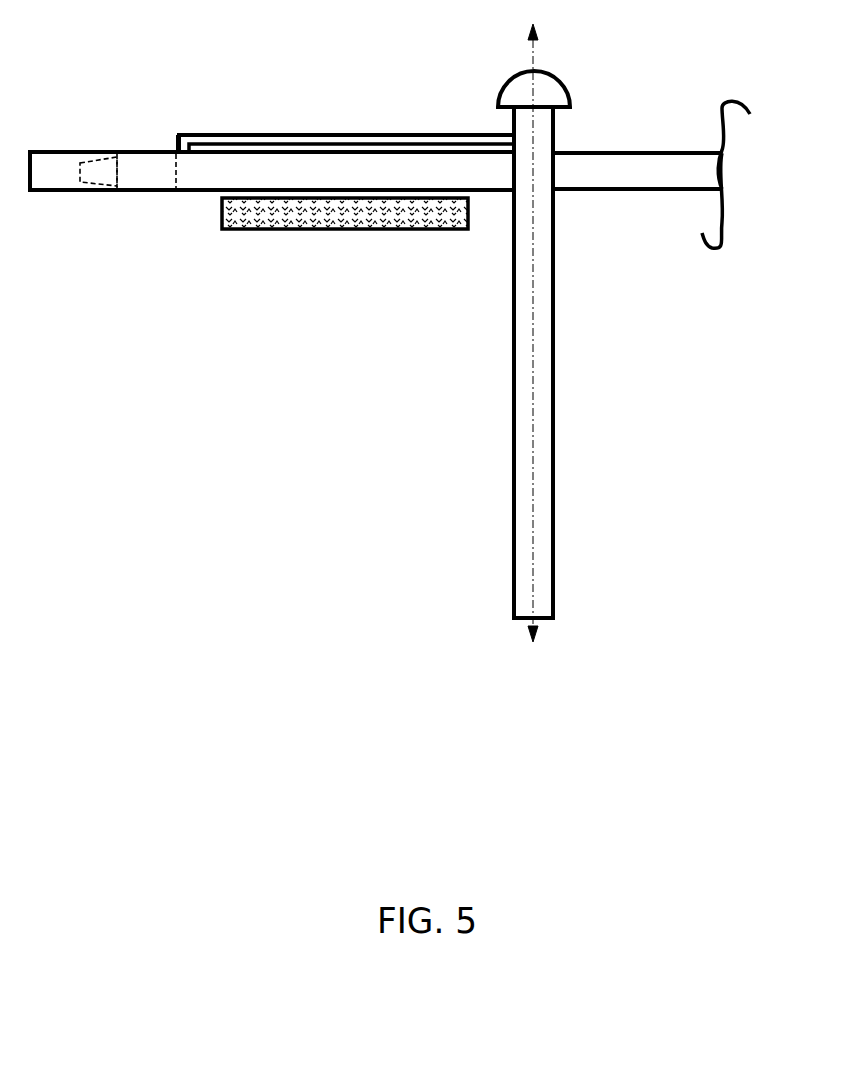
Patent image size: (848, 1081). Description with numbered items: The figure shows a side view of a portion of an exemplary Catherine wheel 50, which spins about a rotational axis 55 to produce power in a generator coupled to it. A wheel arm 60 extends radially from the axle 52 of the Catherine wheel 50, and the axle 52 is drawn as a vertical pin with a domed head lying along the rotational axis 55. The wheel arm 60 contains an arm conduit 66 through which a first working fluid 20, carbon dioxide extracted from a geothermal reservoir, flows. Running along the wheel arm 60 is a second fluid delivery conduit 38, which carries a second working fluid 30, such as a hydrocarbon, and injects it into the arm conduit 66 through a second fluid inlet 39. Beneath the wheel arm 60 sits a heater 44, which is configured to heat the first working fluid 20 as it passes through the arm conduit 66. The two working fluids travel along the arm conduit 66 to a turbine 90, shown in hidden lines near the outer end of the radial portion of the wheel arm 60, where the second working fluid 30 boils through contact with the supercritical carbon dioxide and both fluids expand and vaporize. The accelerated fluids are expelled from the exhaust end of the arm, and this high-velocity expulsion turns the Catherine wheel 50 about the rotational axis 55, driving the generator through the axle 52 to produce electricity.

The first working fluid 20 is at (400, 167).
The second working fluid 30 is at (292, 133).
The second fluid delivery conduit 38 is at (368, 135).
The second fluid inlet 39 is at (180, 135).
The heater 44 is at (300, 210).
The Catherine wheel 50 is at (497, 183).
The axle 52 is at (547, 325).
The rotational axis 55 is at (530, 53).
The wheel arm 60 is at (195, 178).
The arm conduit 66 is at (212, 172).
The turbine 90 is at (163, 170).